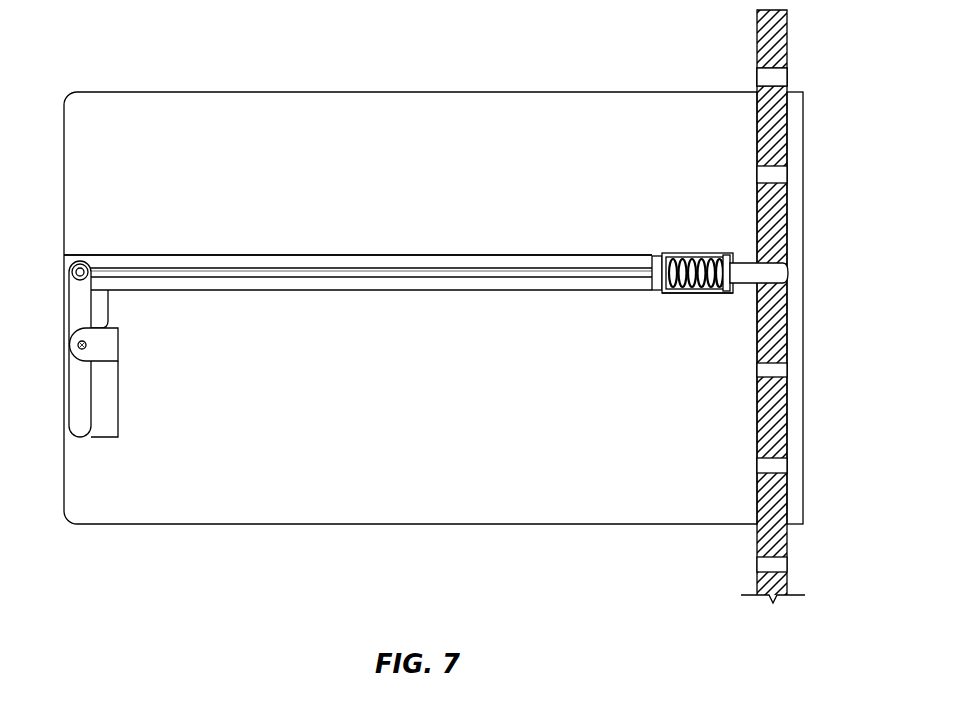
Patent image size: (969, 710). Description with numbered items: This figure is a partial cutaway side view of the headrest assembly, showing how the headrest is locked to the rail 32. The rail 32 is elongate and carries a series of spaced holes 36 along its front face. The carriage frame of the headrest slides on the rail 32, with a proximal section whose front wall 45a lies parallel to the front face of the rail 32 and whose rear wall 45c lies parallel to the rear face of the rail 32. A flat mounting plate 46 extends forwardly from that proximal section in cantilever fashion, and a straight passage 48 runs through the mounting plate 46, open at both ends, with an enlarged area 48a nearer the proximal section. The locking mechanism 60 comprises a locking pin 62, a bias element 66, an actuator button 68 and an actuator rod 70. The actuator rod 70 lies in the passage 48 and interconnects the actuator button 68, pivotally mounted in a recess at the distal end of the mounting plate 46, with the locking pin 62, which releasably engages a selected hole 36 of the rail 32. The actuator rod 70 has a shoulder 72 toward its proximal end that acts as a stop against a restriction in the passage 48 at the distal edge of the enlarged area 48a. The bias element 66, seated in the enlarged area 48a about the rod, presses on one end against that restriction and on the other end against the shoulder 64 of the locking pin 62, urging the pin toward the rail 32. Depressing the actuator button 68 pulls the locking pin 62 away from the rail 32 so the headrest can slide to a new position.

The rail 32 is at (776, 45).
The holes 36 is at (782, 262).
The front wall 45a is at (760, 83).
The rear wall 45c is at (797, 248).
The mounting plate 46 is at (288, 92).
The passage 48 is at (68, 262).
The enlarged area 48a is at (687, 292).
The locking mechanism 60 is at (560, 254).
The locking pin 62 is at (766, 271).
The shoulder 64 is at (716, 255).
The bias element 66 is at (697, 262).
The actuator button 68 is at (82, 418).
The actuator rod 70 is at (470, 273).
The shoulder 72 is at (647, 291).